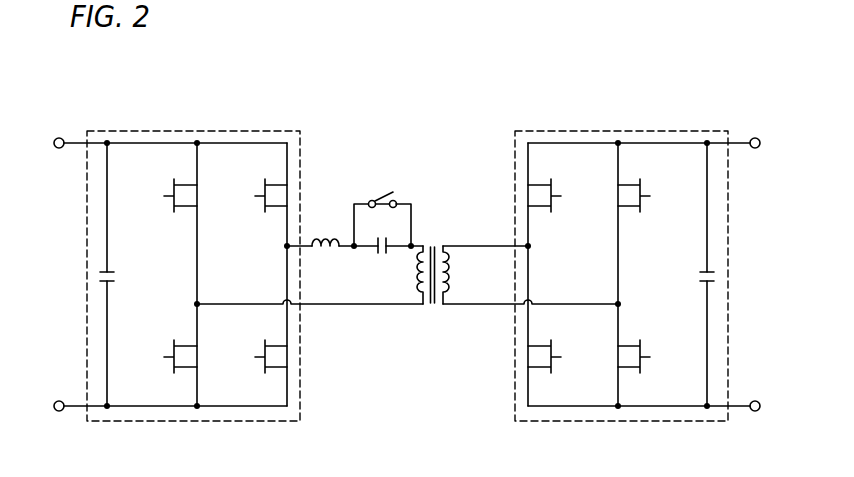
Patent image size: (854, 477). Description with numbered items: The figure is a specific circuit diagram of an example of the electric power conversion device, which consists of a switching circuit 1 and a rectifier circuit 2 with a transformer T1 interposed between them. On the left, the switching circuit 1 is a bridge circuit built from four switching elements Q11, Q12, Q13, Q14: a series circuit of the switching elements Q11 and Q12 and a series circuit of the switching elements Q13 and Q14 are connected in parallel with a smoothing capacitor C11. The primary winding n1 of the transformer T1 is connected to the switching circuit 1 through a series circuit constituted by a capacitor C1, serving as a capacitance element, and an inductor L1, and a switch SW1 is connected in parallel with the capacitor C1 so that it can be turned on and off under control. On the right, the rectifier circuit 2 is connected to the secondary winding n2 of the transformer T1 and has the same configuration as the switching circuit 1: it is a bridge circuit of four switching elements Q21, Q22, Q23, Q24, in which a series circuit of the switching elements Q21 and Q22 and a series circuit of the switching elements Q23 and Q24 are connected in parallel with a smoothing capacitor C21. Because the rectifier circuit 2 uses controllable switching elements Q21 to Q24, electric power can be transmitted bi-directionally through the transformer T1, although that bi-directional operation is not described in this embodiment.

The switching circuit 1 is at (178, 129).
The rectifier circuit 2 is at (663, 129).
The switching element Q11 is at (162, 188).
The switching element Q12 is at (162, 351).
The switching element Q13 is at (252, 188).
The switching element Q14 is at (252, 351).
The switching element Q21 is at (650, 188).
The switching element Q22 is at (650, 351).
The switching element Q23 is at (562, 188).
The switching element Q24 is at (562, 351).
The smoothing capacitor C11 is at (129, 276).
The smoothing capacitor C21 is at (687, 276).
The inductor L1 is at (325, 228).
The capacitor C1 is at (381, 231).
The switch SW1 is at (382, 205).
The transformer T1 is at (432, 291).
The primary winding n1 is at (405, 275).
The secondary winding n2 is at (460, 275).